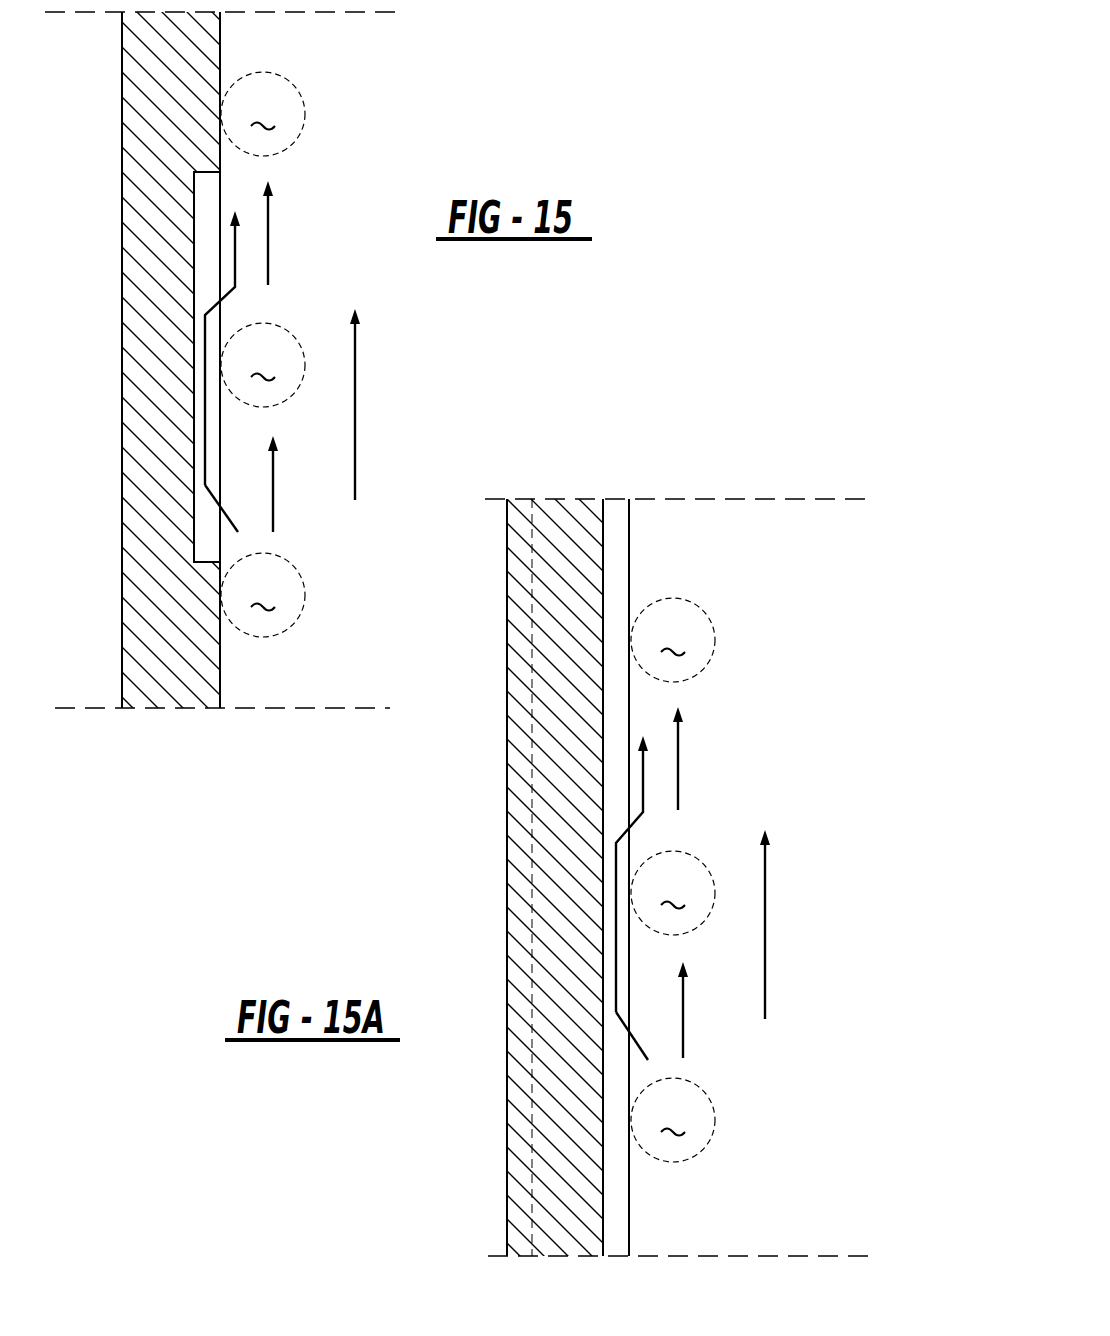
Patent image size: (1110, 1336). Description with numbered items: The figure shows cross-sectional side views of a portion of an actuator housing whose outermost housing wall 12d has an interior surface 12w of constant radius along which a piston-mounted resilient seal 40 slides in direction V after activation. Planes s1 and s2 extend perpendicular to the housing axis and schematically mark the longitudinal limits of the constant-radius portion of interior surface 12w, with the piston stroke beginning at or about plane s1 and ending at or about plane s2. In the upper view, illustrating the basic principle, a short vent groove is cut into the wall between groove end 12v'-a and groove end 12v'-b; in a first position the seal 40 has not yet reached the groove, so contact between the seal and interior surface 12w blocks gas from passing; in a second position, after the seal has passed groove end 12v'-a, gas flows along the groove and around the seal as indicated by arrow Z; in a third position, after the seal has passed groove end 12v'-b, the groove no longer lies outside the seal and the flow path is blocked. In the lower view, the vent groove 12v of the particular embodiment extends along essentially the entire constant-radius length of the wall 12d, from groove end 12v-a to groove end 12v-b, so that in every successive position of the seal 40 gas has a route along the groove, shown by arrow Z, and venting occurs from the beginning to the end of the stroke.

In FIG. 15, the housing wall 12d is at (122, 153).
In FIG. 15A, the housing wall 12d is at (558, 688).
In FIG. 15, the vent groove 12v is at (122, 367).
In FIG. 15A, the vent groove 12v is at (518, 1024).
In FIG. 15, the groove end 12v'-b is at (118, 245).
In FIG. 15, the groove end 12v'-a is at (110, 512).
In FIG. 15A, the groove end 12v-b is at (603, 500).
In FIG. 15A, the groove end 12v-a is at (602, 1255).
In FIG. 15, the interior surface 12w is at (220, 652).
In FIG. 15A, the interior surface 12w is at (629, 1197).
In FIG. 15, the resilient seal 40 is at (303, 97).
In FIG. 15A, the resilient seal 40 is at (713, 623).
In FIG. 15, the gas flow arrow Z is at (205, 412).
In FIG. 15A, the gas flow arrow Z is at (613, 937).
In FIG. 15, the piston travel direction V is at (366, 404).
In FIG. 15A, the piston travel direction V is at (777, 924).
In FIG. 15, the plane s1 is at (333, 708).
In FIG. 15A, the plane s1 is at (823, 1256).
In FIG. 15, the plane s2 is at (377, 13).
In FIG. 15A, the plane s2 is at (836, 499).